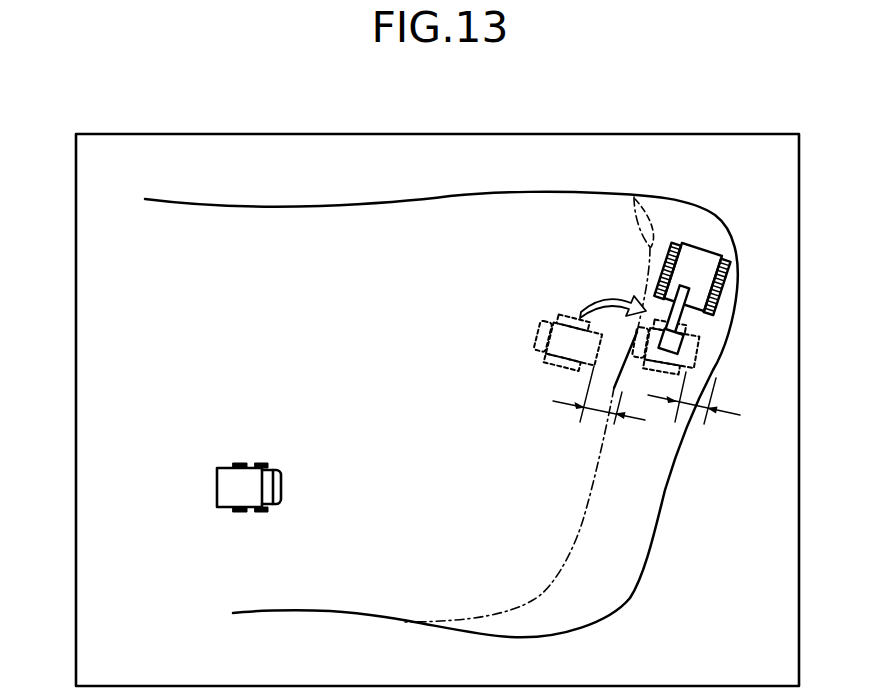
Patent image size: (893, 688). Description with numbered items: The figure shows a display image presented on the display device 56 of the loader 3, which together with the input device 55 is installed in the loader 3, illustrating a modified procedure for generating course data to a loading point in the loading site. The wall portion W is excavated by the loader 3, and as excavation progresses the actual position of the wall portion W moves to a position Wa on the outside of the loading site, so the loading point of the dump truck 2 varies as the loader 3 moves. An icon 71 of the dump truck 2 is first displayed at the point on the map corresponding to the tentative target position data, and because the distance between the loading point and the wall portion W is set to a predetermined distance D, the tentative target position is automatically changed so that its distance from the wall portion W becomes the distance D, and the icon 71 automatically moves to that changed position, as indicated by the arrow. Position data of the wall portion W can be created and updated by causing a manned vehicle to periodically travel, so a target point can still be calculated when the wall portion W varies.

The dump truck 2 is at (217, 487).
The loader 3 is at (724, 275).
The icon 71 is at (546, 320).
The wall portion W is at (440, 200).
The position Wa is at (634, 197).
The input device 55 is at (437, 386).
The display device 56 is at (716, 133).
The distance D is at (597, 410).